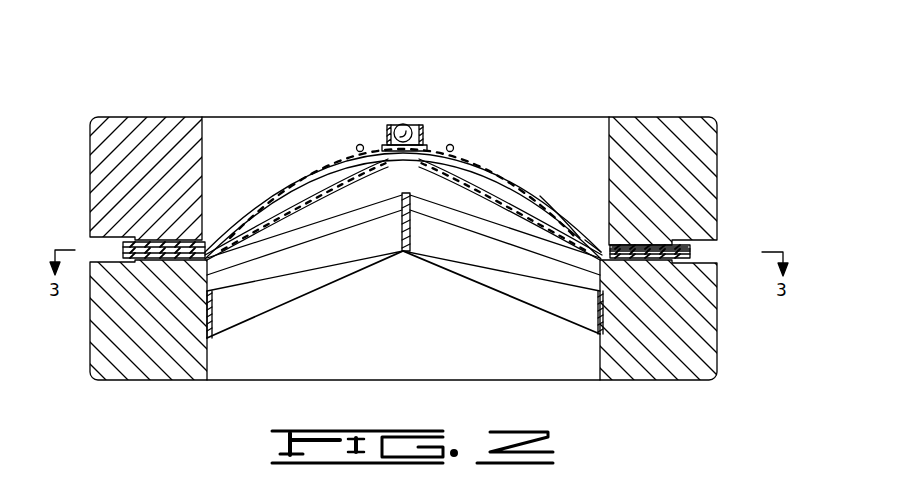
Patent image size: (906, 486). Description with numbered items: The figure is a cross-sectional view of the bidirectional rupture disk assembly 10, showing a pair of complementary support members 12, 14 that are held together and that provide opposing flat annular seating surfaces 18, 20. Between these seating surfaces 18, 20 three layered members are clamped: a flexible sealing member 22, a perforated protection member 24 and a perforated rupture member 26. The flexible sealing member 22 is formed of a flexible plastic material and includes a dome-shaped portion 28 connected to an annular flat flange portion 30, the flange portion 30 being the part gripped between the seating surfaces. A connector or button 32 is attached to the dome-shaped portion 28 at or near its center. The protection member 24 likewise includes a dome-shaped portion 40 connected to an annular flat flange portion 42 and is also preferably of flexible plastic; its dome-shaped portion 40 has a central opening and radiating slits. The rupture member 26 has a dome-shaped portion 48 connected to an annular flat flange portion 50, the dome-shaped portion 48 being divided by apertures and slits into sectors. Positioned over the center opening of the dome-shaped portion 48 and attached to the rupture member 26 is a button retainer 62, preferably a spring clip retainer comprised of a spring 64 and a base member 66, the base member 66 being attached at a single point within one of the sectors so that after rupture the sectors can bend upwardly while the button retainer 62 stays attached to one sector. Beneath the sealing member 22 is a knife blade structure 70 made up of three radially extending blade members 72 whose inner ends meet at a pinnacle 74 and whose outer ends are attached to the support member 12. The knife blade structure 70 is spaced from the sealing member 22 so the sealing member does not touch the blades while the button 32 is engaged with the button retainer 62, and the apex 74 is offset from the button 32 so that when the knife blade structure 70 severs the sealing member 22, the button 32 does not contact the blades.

The bidirectional rupture disk assembly 10 is at (749, 81).
The support member 12 is at (703, 363).
The support member 14 is at (728, 133).
The flat annular seating surface 18 is at (632, 268).
The flat annular seating surface 20 is at (648, 248).
The flexible sealing member 22 is at (482, 174).
The perforated protection member 24 is at (493, 166).
The perforated rupture member 26 is at (531, 174).
The dome-shaped portion 28 is at (306, 196).
The annular flat flange portion 30 is at (655, 300).
The button 32 is at (403, 118).
The dome-shaped portion 40 is at (597, 227).
The annular flat flange portion 42 is at (650, 246).
The dome-shaped portion 48 is at (543, 192).
The annular flat flange portion 50 is at (650, 246).
The button retainer 62 is at (359, 146).
The spring 64 is at (382, 145).
The base member 66 is at (449, 146).
The knife blade structure 70 is at (263, 296).
The blade members 72 is at (333, 262).
The pinnacle 74 is at (400, 183).